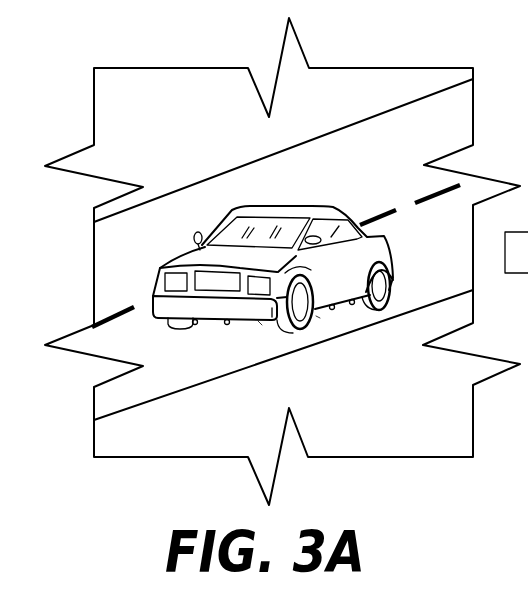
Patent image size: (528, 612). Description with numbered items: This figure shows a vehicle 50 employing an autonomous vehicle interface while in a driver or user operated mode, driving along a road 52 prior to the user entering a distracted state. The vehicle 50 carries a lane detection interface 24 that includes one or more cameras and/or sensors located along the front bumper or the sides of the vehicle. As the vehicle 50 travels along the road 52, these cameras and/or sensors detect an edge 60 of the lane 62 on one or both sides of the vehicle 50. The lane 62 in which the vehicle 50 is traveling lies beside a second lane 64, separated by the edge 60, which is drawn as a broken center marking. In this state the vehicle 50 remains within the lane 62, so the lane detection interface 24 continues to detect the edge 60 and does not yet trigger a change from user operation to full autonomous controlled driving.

The lane detection interface 24 is at (213, 326).
The vehicle 50 is at (384, 234).
The road 52 is at (259, 329).
The edge 60 is at (378, 207).
The lane 62 is at (161, 377).
The second lane 64 is at (126, 263).